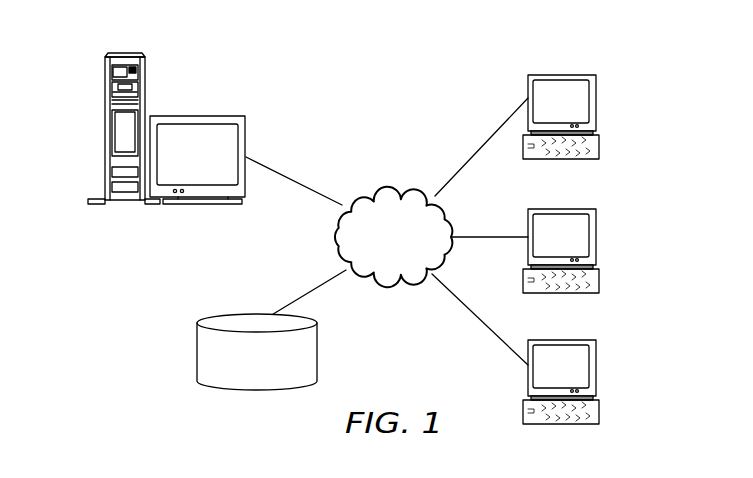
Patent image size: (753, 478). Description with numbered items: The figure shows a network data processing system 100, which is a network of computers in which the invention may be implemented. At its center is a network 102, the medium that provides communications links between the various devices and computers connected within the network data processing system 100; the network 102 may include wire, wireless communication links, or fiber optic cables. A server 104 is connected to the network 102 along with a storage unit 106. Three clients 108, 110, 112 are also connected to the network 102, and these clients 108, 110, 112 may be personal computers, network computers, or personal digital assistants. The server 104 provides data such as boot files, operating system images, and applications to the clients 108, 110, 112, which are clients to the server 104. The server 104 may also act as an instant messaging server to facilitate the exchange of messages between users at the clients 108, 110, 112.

The network data processing system 100 is at (440, 83).
The network 102 is at (363, 190).
The server 104 is at (106, 133).
The storage unit 106 is at (197, 352).
The client 108 is at (596, 103).
The client 110 is at (596, 238).
The client 112 is at (596, 367).